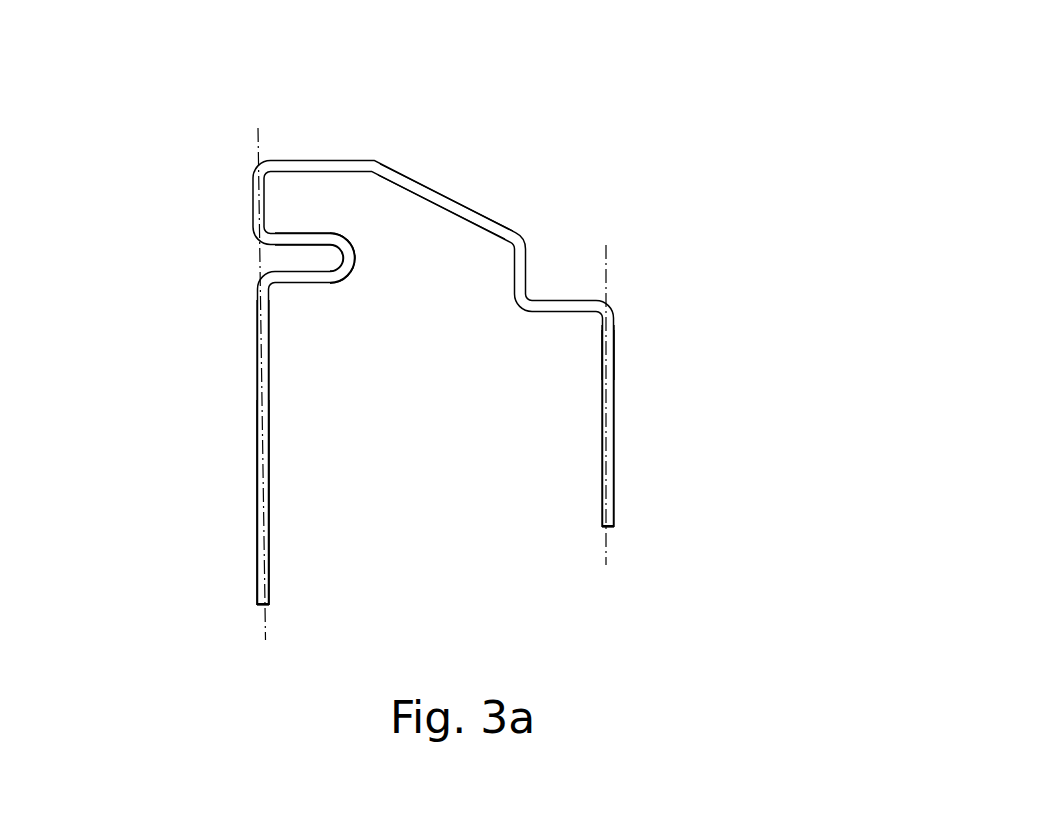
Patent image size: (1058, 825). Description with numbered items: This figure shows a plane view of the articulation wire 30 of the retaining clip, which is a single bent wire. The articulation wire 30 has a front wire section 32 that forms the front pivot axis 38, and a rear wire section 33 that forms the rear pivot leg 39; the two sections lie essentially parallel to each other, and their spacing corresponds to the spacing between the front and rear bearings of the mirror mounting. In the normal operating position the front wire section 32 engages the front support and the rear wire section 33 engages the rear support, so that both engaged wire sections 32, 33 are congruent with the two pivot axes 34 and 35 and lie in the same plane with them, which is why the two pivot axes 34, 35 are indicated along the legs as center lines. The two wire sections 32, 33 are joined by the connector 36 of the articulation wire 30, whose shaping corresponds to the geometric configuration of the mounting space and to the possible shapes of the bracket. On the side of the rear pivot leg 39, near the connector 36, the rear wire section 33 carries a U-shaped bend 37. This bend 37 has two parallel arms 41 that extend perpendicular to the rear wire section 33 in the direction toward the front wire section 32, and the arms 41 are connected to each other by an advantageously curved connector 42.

The articulation wire 30 is at (528, 257).
The front wire section 32 is at (615, 442).
The rear wire section 33 is at (262, 380).
The pivot axis 34 is at (610, 550).
The pivot axis 35 is at (266, 630).
The connector 36 is at (459, 207).
The U-shaped bend 37 is at (321, 228).
The front pivot axis 38 is at (610, 357).
The rear pivot leg 39 is at (262, 513).
The parallel arms 41 is at (267, 273).
The curved connector 42 is at (355, 253).